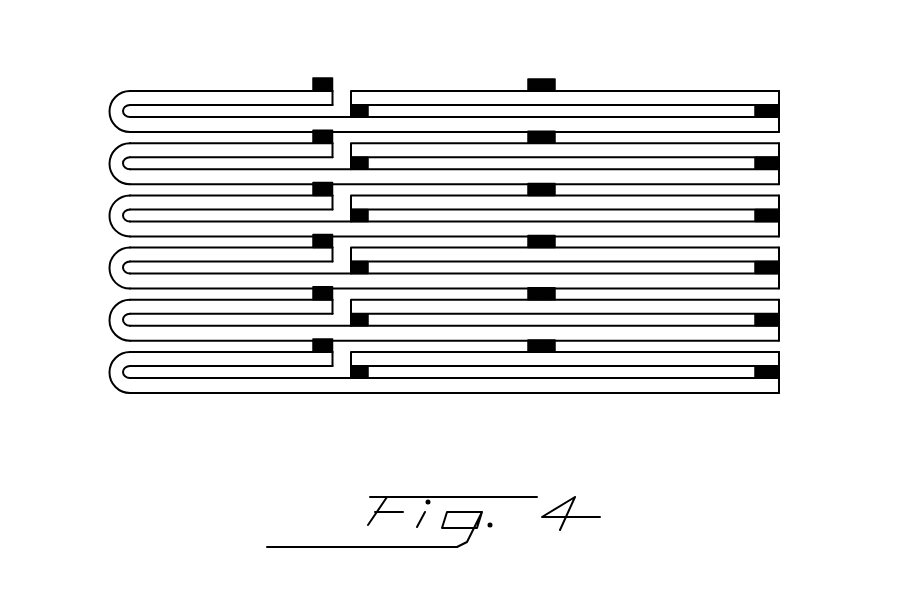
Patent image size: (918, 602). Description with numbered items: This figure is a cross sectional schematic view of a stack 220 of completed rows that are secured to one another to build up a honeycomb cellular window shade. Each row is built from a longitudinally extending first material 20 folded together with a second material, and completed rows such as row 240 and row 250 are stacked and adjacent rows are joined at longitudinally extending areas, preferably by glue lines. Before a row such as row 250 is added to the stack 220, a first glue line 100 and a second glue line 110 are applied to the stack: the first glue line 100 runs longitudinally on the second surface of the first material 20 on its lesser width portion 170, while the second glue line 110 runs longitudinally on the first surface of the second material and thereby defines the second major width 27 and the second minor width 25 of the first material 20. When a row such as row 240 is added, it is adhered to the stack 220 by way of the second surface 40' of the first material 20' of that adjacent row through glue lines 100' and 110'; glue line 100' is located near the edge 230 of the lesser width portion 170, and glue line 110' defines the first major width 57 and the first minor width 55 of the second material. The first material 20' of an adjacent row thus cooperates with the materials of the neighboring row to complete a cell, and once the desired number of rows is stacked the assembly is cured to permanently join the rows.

The first material 20 is at (90, 249).
The first material of an adjacent row 20' is at (90, 134).
The stack 220 is at (231, 75).
The row 240 is at (92, 168).
The row 250 is at (92, 222).
The lesser width portion 170 is at (218, 202).
The edge of the lesser width portion 230 is at (341, 197).
The second minor width 25 is at (492, 228).
The second major width 27 is at (702, 227).
The first minor width 55 is at (452, 196).
The second surface of the first material of an adjacent row 40' is at (810, 242).
The first glue line 100 is at (273, 260).
The glue line 100' is at (386, 196).
The second glue line 110 is at (561, 341).
The glue line 110' is at (605, 116).
The first major width 57 is at (657, 200).